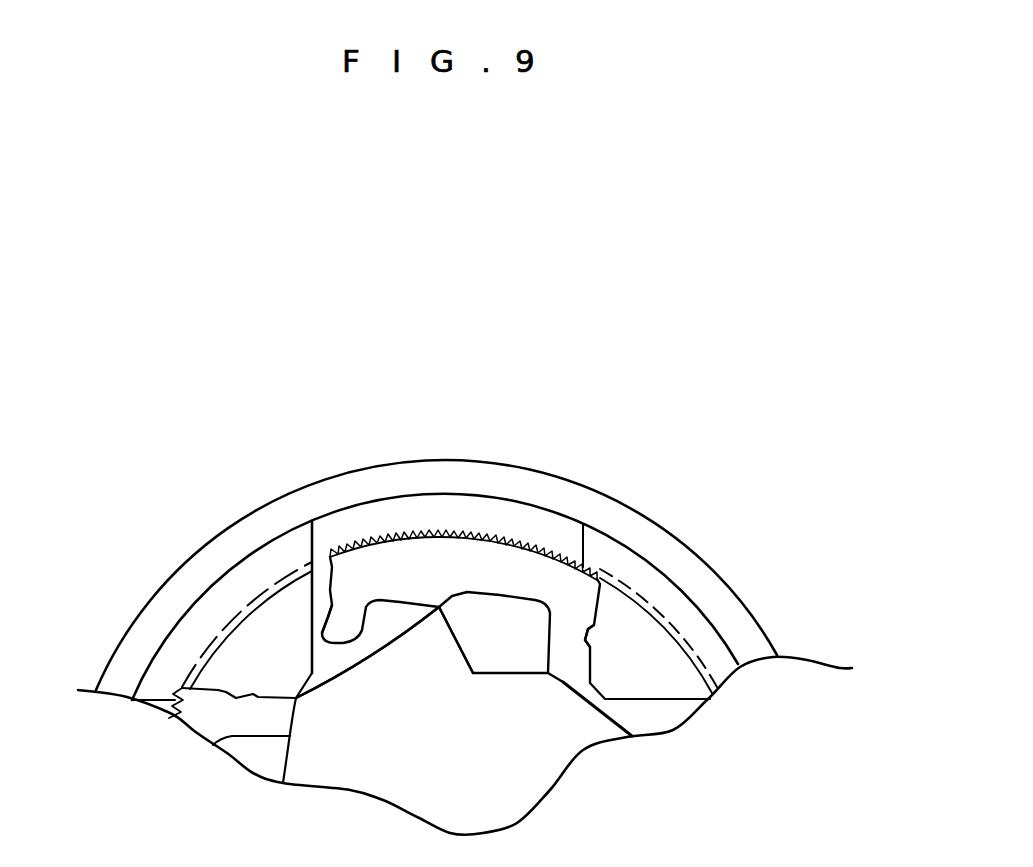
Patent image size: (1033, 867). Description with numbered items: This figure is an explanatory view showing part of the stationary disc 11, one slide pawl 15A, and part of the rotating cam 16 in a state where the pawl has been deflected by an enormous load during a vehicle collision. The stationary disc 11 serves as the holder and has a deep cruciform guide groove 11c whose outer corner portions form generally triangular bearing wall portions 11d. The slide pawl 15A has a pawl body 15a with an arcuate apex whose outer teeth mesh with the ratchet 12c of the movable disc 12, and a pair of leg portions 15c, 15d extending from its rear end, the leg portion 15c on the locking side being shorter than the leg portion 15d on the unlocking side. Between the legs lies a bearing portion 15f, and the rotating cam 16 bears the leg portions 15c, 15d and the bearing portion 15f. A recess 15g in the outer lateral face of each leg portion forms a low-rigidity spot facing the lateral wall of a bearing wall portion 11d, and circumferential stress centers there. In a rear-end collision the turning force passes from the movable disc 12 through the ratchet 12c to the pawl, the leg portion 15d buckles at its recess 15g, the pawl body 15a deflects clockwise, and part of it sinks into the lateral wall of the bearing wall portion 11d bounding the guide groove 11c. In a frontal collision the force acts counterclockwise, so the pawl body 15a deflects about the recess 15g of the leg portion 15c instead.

The stationary disc 11 is at (562, 478).
The guide groove 11c is at (320, 558).
The bearing wall portion 11d is at (222, 681).
The movable disc 12 is at (636, 553).
The ratchet 12c is at (643, 590).
The slide pawl 15A is at (447, 544).
The slide pawl body 15a is at (458, 532).
The leg portion 15c is at (343, 633).
The leg portion 15d is at (563, 678).
The bearing portion 15f is at (439, 607).
The recess 15g is at (332, 605).
The rotating cam 16 is at (458, 767).